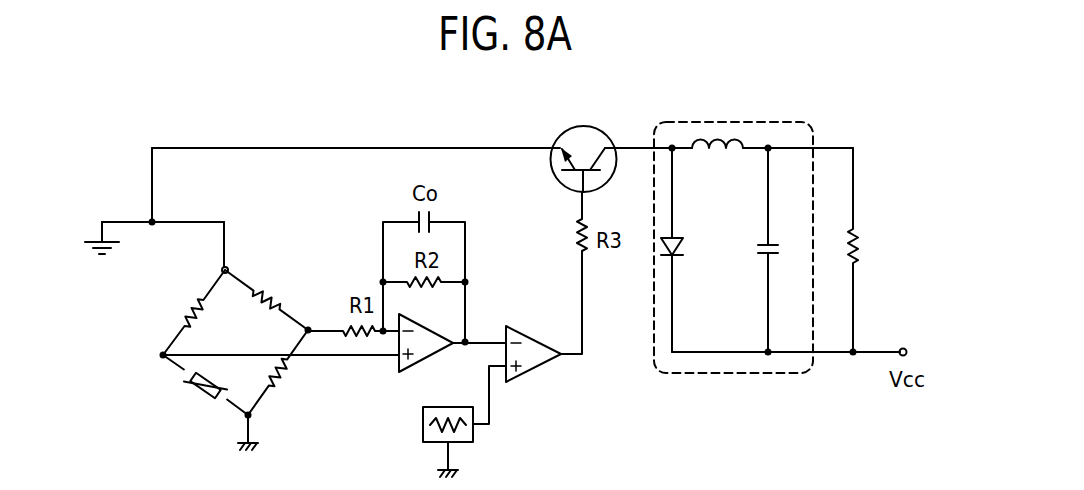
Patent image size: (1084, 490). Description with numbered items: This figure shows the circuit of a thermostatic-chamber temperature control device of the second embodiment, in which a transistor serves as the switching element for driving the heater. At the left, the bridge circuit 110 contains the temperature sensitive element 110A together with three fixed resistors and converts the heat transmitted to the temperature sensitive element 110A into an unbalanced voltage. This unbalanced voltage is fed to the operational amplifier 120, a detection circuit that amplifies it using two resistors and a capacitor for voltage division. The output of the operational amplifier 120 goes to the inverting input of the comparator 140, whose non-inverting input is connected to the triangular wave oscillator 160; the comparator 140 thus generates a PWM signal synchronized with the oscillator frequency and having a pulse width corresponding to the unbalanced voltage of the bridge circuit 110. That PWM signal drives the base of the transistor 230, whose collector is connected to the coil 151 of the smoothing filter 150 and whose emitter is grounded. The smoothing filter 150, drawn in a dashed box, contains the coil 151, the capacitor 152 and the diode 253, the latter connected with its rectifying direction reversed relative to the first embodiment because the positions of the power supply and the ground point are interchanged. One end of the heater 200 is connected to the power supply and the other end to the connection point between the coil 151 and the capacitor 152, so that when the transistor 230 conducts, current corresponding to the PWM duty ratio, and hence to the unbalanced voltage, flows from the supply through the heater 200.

The bridge circuit 110 is at (150, 331).
The temperature sensitive element 110A is at (207, 398).
The operational amplifier 120 is at (428, 360).
The comparator 140 is at (527, 373).
The triangular wave oscillator 160 is at (462, 443).
The transistor 230 is at (582, 142).
The coil 151 is at (712, 142).
The diode 253 is at (680, 247).
The capacitor 152 is at (758, 254).
The heater 200 is at (859, 241).
The smoothing filter 150 is at (730, 373).